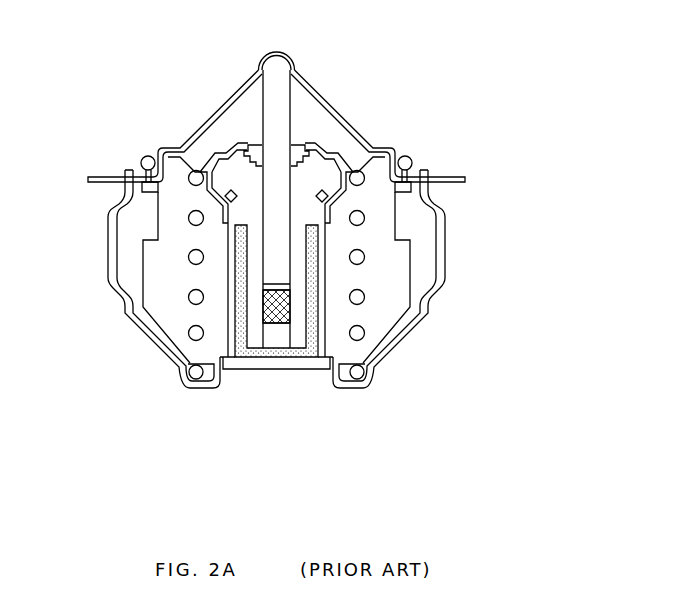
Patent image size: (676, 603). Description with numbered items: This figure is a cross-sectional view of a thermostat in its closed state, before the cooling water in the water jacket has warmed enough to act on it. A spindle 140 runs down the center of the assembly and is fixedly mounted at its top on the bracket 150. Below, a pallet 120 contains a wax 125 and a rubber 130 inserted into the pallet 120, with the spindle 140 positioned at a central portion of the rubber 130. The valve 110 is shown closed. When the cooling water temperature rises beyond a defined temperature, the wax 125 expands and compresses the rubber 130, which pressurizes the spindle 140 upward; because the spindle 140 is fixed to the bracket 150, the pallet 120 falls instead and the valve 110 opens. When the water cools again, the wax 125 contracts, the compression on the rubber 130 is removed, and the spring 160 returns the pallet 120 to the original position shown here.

The valve 110 is at (355, 157).
The pallet 120 is at (272, 360).
The wax 125 is at (327, 345).
The rubber 130 is at (250, 308).
The spindle 140 is at (268, 118).
The bracket 150 is at (333, 91).
The spring 160 is at (364, 256).